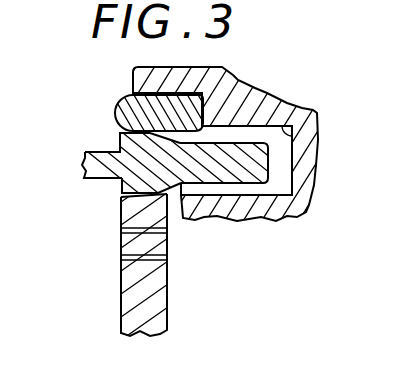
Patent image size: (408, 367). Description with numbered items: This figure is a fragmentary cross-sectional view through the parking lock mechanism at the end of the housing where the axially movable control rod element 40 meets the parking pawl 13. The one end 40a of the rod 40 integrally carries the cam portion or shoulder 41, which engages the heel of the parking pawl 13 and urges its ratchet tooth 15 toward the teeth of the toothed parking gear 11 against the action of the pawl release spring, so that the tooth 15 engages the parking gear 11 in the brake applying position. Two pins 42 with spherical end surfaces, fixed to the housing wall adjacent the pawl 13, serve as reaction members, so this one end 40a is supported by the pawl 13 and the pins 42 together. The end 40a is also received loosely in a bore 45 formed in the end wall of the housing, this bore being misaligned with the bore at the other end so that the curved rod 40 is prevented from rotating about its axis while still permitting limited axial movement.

The parking gear 11 is at (128, 282).
The parking pawl 13 is at (166, 218).
The ratchet tooth 15 is at (126, 230).
The control rod element 40 is at (98, 153).
The one end of the rod 40a is at (250, 172).
The cam portion 41 is at (125, 188).
The pins 42 is at (134, 97).
The bore 45 is at (292, 133).